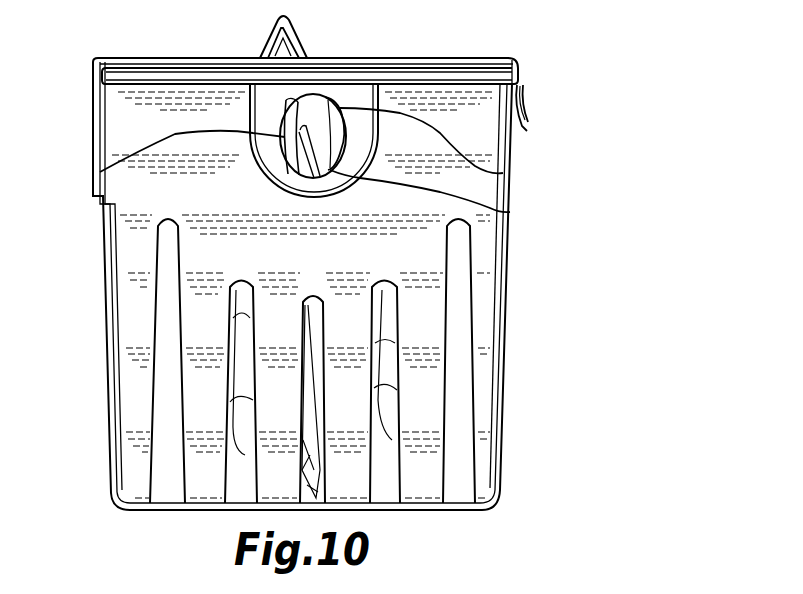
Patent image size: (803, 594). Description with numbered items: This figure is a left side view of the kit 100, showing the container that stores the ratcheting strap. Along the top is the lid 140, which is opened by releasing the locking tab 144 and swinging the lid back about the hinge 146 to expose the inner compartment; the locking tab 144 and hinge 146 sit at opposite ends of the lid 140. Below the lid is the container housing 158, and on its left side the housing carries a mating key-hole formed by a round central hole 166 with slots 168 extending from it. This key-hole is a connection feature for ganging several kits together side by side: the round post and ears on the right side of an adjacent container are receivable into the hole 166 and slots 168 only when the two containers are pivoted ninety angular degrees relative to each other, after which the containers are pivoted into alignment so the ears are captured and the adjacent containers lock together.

The kit 100 is at (566, 307).
The lid 140 is at (387, 58).
The locking tab 144 is at (526, 127).
The hinge 146 is at (92, 77).
The container housing 158 is at (503, 409).
The round central hole 166 is at (100, 172).
The slots 168 is at (503, 173).